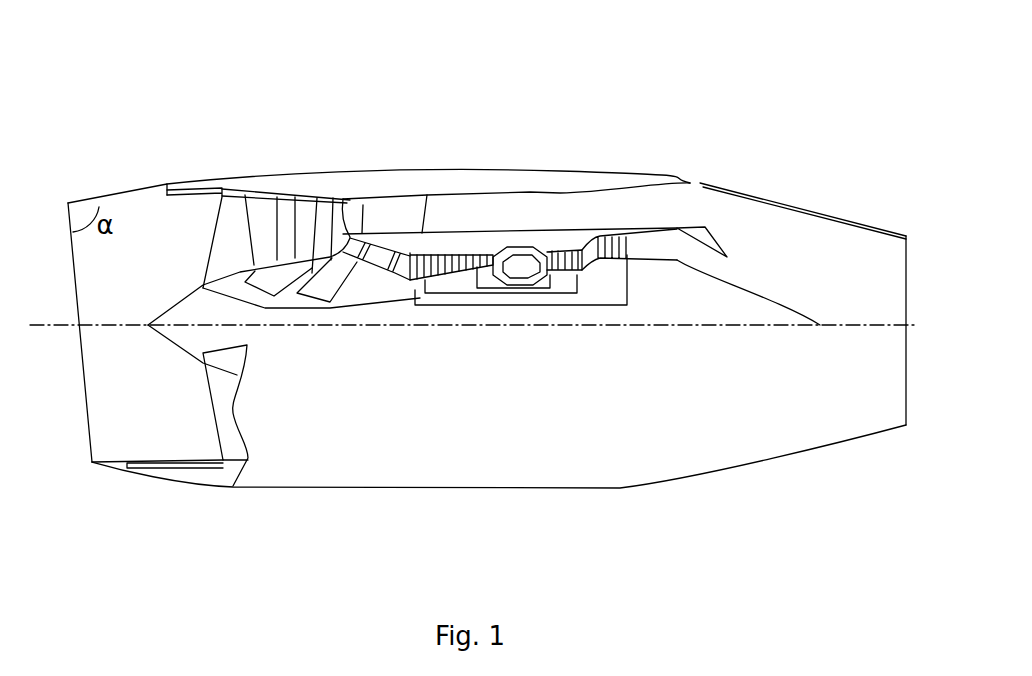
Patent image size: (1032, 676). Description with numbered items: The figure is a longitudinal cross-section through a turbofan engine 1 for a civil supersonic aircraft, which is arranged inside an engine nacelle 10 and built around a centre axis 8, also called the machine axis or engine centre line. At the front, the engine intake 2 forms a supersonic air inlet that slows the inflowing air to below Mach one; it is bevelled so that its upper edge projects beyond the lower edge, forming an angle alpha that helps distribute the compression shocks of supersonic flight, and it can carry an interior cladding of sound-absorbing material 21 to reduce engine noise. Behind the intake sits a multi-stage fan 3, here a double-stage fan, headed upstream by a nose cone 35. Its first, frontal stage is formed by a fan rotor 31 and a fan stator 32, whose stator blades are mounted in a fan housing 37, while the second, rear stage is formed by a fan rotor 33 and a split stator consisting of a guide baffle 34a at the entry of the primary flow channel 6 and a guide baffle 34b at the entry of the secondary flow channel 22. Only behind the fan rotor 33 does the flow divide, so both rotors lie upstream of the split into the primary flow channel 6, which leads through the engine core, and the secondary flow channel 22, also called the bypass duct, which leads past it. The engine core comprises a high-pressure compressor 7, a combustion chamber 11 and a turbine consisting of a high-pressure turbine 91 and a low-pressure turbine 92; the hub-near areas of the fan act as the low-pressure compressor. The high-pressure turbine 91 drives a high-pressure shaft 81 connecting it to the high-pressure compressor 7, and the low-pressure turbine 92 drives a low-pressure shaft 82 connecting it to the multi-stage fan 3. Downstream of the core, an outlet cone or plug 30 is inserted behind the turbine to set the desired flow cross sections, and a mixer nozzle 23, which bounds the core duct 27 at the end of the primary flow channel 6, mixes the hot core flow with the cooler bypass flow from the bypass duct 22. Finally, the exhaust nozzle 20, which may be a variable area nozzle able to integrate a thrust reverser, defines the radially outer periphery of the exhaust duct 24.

The turbofan engine 1 is at (97, 85).
The engine intake 2 is at (143, 200).
The multi-stage fan 3 is at (303, 196).
The primary flow channel 6 is at (398, 270).
The high-pressure compressor 7 is at (453, 282).
The centre axis 8 is at (58, 327).
The engine nacelle 10 is at (465, 488).
The combustion chamber 11 is at (523, 243).
The exhaust nozzle 20 is at (838, 212).
The sound-absorbing material 21 is at (192, 196).
The secondary flow channel 22 is at (490, 212).
The mixer nozzle 23 is at (697, 225).
The exhaust duct 24 is at (852, 307).
The core duct 27 is at (690, 250).
The outlet cone or plug 30 is at (730, 267).
The fan rotor 31 is at (237, 207).
The fan stator 32 is at (288, 208).
The fan rotor 33 is at (350, 202).
The guide baffle 34a is at (410, 199).
The guide baffle 34b is at (408, 215).
The nose cone 35 is at (173, 307).
The fan housing 37 is at (262, 200).
The high-pressure shaft 81 is at (497, 292).
The low-pressure shaft 82 is at (353, 282).
The high-pressure turbine 91 is at (563, 278).
The low-pressure turbine 92 is at (617, 270).